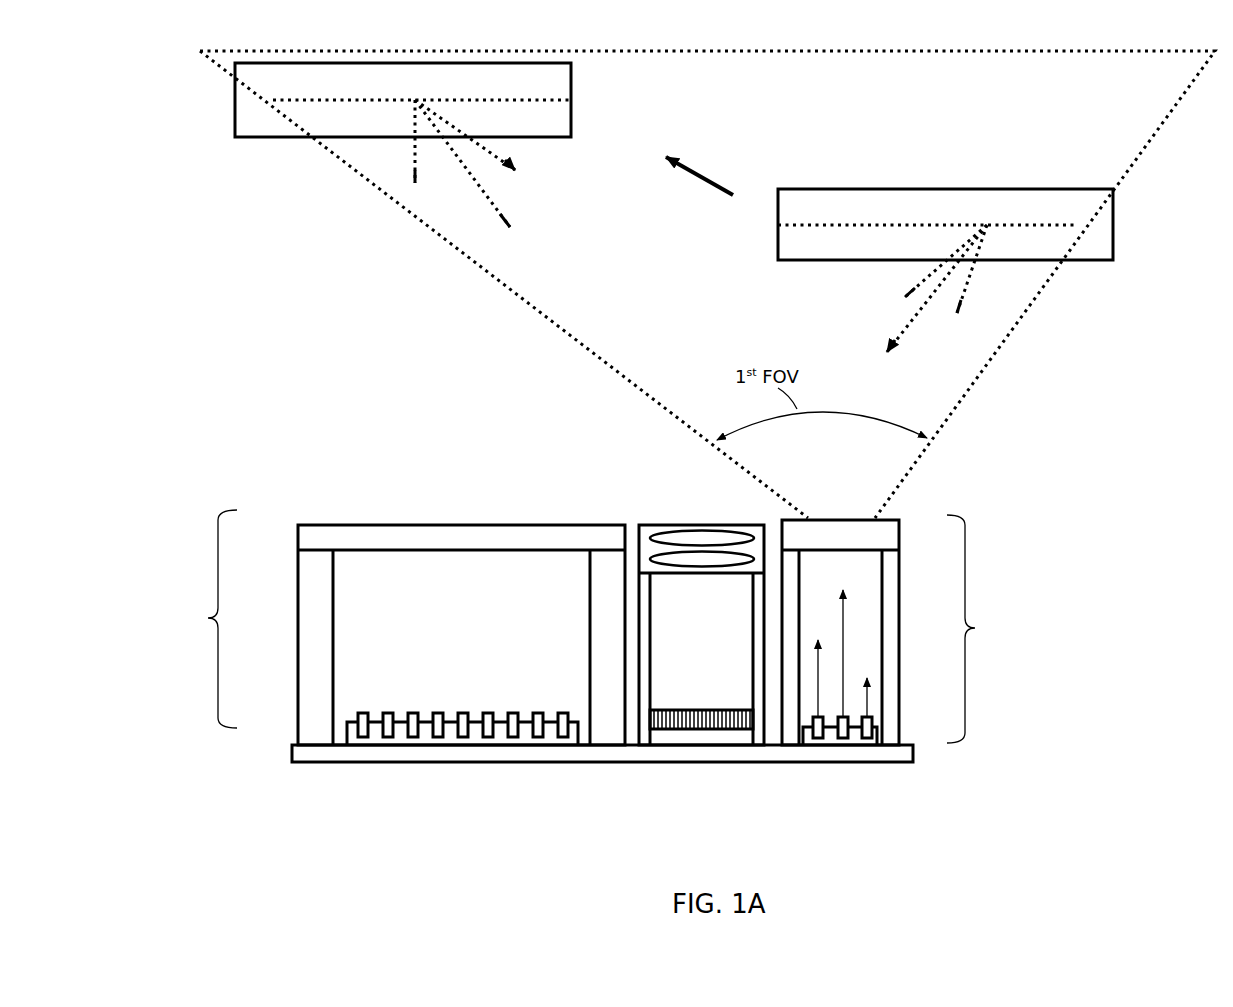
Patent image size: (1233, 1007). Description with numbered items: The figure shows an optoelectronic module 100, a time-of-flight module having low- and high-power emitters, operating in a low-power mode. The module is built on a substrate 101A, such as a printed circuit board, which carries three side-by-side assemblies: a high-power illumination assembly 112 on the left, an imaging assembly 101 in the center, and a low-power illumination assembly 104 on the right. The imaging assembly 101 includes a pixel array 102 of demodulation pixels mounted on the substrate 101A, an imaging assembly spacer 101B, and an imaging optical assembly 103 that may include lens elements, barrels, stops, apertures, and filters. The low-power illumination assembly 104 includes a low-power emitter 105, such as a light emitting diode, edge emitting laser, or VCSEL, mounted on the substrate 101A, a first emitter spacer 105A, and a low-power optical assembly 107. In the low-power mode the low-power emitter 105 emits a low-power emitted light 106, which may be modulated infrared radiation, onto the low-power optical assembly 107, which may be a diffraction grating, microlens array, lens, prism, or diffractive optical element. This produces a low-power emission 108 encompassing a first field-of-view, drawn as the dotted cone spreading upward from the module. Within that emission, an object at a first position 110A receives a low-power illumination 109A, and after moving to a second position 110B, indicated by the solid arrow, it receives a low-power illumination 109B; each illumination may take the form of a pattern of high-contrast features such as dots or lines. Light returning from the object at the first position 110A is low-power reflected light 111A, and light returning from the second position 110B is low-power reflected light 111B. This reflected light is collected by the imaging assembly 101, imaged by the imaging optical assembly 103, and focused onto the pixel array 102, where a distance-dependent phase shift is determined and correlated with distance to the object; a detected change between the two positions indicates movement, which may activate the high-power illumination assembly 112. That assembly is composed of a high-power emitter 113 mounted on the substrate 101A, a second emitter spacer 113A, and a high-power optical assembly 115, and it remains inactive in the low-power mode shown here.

The optoelectronic module 100 is at (172, 92).
The imaging assembly 101 is at (642, 475).
The substrate 101A is at (913, 755).
The imaging assembly spacer 101B is at (643, 665).
The pixel array 102 is at (735, 730).
The imaging optical assembly 103 is at (688, 528).
The low-power illumination assembly 104 is at (975, 628).
The low-power emitter 105 is at (857, 738).
The first emitter spacer 105A is at (888, 677).
The low-power emitted light 106 is at (845, 623).
The low-power optical assembly 107 is at (890, 517).
The low-power emission 108 is at (953, 412).
The low-power illumination 109A is at (878, 225).
The low-power illumination 109B is at (527, 102).
The first position 110A is at (810, 189).
The second position 110B is at (572, 77).
The low-power reflected light 111A is at (907, 328).
The low-power reflected light 111B is at (480, 193).
The high-power illumination assembly 112 is at (208, 618).
The high-power emitter 113 is at (357, 740).
The second emitter spacer 113A is at (310, 647).
The high-power optical assembly 115 is at (310, 538).